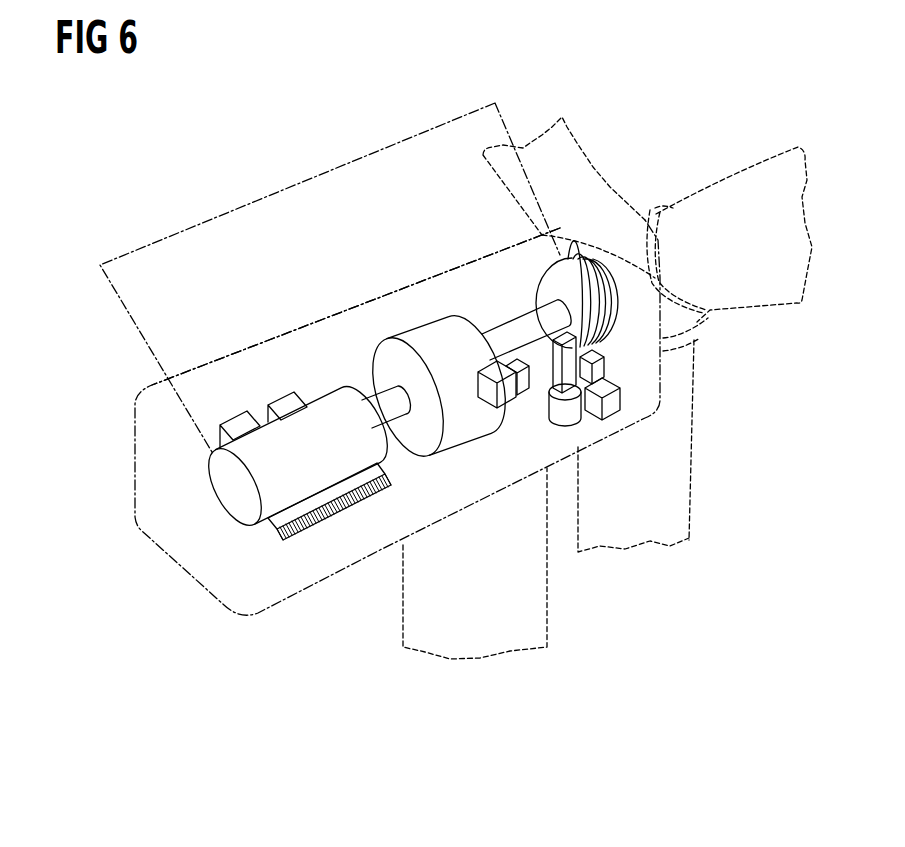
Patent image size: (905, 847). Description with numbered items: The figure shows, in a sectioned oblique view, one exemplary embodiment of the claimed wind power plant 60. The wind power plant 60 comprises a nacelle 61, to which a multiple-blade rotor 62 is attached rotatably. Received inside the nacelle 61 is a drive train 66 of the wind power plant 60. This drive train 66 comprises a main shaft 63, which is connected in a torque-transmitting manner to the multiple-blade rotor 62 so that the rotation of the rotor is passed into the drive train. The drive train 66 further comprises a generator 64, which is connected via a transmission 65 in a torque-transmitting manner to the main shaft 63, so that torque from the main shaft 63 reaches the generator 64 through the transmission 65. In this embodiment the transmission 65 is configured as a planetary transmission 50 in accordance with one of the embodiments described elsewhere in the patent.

The wind power plant 60 is at (168, 186).
The drive train 66 is at (306, 176).
The nacelle 61 is at (227, 354).
The generator 64 is at (334, 404).
The transmission 65 is at (429, 344).
The planetary transmission 50 is at (424, 320).
The main shaft 63 is at (531, 312).
The multiple-blade rotor 62 is at (692, 491).